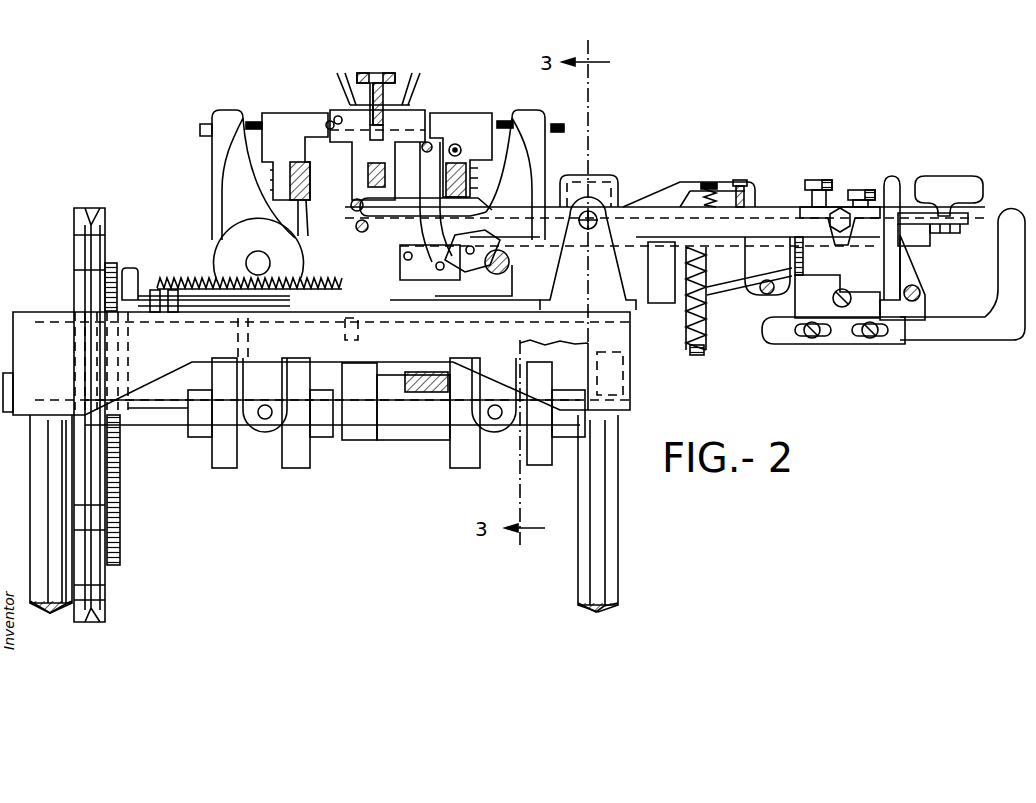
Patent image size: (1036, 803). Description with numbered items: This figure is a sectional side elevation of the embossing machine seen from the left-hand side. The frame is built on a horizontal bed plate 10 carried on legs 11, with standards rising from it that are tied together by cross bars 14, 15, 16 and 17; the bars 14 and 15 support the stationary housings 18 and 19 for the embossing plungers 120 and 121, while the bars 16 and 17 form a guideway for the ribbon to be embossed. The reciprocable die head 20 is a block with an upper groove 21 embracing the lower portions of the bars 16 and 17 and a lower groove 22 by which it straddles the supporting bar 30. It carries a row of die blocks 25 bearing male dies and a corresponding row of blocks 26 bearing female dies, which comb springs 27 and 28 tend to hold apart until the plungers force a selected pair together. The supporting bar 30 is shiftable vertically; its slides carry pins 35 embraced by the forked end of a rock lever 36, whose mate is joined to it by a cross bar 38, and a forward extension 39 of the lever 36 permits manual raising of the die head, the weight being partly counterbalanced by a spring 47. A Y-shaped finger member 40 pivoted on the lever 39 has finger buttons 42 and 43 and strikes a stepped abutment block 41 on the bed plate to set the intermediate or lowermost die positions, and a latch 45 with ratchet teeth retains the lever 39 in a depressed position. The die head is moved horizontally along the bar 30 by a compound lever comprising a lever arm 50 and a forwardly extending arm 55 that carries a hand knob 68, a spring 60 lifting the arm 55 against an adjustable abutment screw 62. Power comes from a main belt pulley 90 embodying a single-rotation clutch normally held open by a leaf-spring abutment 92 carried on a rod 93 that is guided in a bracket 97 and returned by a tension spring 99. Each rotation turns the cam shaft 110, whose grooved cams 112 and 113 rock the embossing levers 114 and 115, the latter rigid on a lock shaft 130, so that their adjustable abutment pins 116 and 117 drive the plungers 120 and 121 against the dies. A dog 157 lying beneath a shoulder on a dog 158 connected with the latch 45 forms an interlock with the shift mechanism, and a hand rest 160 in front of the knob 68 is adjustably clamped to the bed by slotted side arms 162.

The bed plate 10 is at (316, 363).
The legs 11 is at (36, 478).
The cross bar 14 is at (262, 239).
The cross bar 15 is at (470, 184).
The cross bar 16 is at (366, 72).
The cross bar 17 is at (386, 72).
The stationary housing 18 is at (295, 156).
The stationary housing 19 is at (471, 155).
The die head 20 is at (352, 178).
The groove 21 is at (384, 133).
The groove 22 is at (386, 176).
The die blocks 25 is at (336, 117).
The blocks 26 is at (428, 140).
The comb spring 27 is at (342, 90).
The comb spring 28 is at (412, 112).
The supporting bar 30 is at (352, 206).
The pins 35 is at (360, 230).
The rock lever 36 is at (520, 212).
The cross bar 38 is at (610, 175).
The forward extension 39 is at (772, 206).
The Y-shaped finger member 40 is at (832, 206).
The stepped abutment block 41 is at (858, 276).
The finger button 42 is at (819, 180).
The forward finger button 43 is at (861, 188).
The latch 45 is at (892, 178).
The spring 47 is at (708, 268).
The lever arm 50 is at (672, 183).
The forwardly extending arm 55 is at (970, 220).
The spring 60 is at (712, 189).
The adjustable abutment screw 62 is at (746, 186).
The hand knob 68 is at (945, 176).
The main belt pulley 90 is at (105, 232).
The slidable abutment 92 is at (120, 272).
The rod 93 is at (195, 314).
The bracket 97 is at (449, 318).
The tension spring 99 is at (208, 278).
The cam shaft 110 is at (165, 425).
The grooved cam 112 is at (298, 468).
The grooved cam 113 is at (468, 468).
The embossing lever 114 is at (212, 158).
The embossing lever 115 is at (535, 155).
The adjustable abutment pin 116 is at (256, 121).
The adjustable abutment pin 117 is at (556, 123).
The embossing plunger 120 is at (328, 122).
The plunger 121 is at (457, 143).
The lock shaft 130 is at (502, 274).
The dog 157 is at (848, 306).
The dog 158 is at (906, 280).
The hand rest 160 is at (998, 272).
The slotted side arms 162 is at (876, 340).